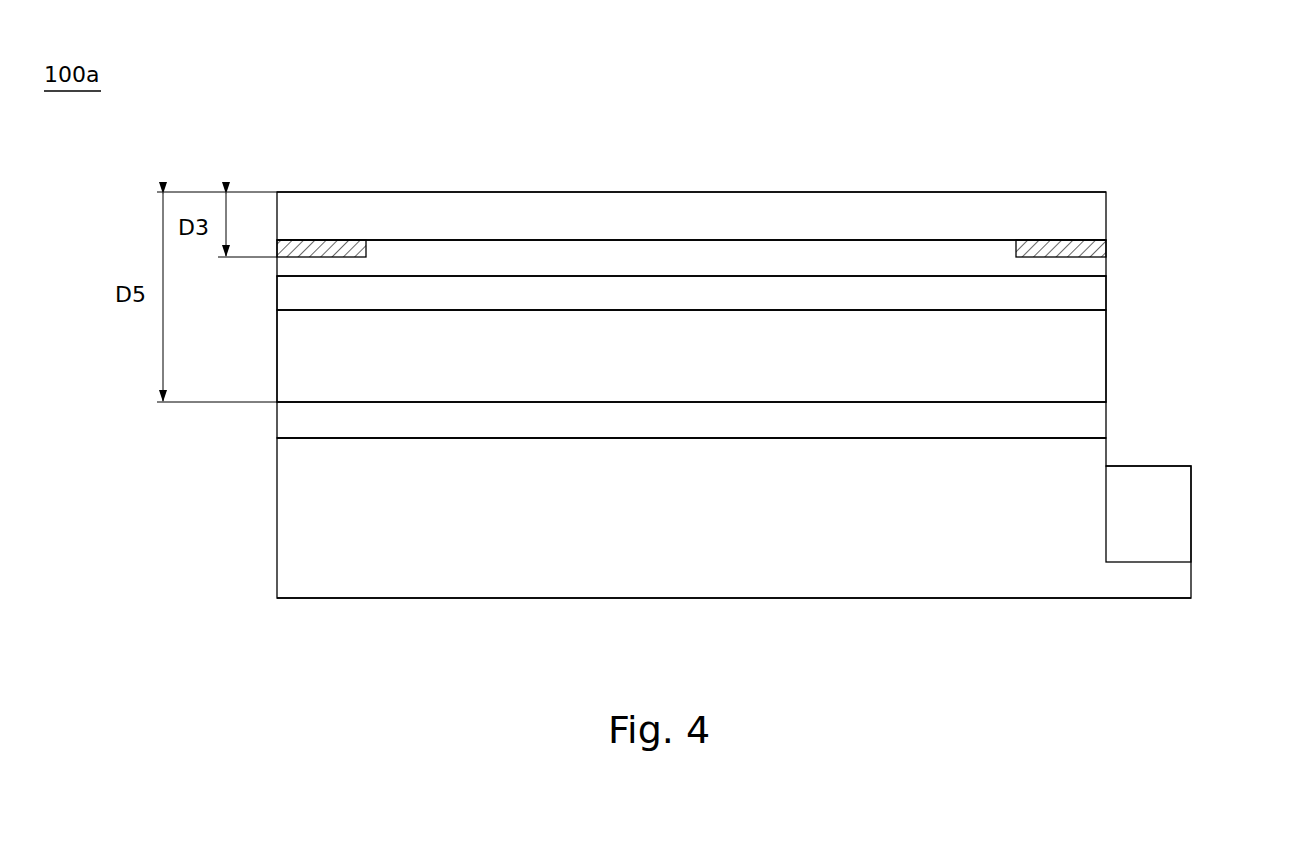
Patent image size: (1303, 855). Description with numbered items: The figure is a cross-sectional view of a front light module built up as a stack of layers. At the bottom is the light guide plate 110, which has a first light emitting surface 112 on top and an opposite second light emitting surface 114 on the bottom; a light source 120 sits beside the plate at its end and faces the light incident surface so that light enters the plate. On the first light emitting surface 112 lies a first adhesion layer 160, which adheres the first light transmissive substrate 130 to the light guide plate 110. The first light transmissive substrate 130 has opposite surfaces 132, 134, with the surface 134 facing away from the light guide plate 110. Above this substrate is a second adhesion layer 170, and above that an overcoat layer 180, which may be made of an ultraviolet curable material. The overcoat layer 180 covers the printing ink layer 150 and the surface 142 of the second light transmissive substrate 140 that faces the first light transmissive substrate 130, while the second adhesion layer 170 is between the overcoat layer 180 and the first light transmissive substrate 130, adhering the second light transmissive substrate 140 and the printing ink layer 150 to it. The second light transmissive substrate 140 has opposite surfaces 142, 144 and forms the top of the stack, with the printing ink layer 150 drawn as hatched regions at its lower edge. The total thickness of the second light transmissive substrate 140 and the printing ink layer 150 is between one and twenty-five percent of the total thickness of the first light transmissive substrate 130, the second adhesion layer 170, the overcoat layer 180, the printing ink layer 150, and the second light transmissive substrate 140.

The light guide plate 110 is at (1087, 448).
The first light emitting surface 112 is at (317, 437).
The second light emitting surface 114 is at (323, 597).
The light source 120 is at (1175, 517).
The first light transmissive substrate 130 is at (1087, 354).
The surface 132 is at (818, 399).
The surface 134 is at (690, 307).
The second light transmissive substrate 140 is at (1093, 215).
The surface 142 is at (976, 229).
The surface 144 is at (916, 189).
The printing ink layer 150 is at (1105, 252).
The first adhesion layer 160 is at (407, 420).
The second adhesion layer 170 is at (603, 293).
The overcoat layer 180 is at (506, 255).